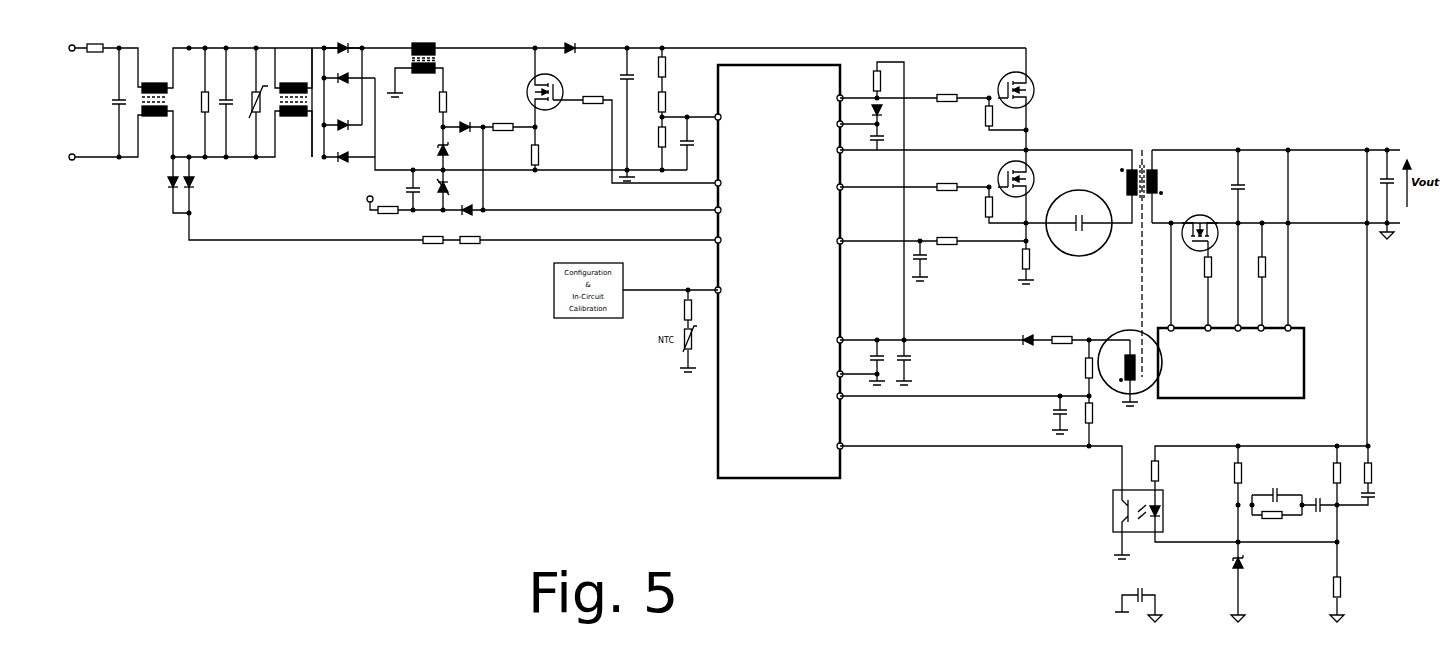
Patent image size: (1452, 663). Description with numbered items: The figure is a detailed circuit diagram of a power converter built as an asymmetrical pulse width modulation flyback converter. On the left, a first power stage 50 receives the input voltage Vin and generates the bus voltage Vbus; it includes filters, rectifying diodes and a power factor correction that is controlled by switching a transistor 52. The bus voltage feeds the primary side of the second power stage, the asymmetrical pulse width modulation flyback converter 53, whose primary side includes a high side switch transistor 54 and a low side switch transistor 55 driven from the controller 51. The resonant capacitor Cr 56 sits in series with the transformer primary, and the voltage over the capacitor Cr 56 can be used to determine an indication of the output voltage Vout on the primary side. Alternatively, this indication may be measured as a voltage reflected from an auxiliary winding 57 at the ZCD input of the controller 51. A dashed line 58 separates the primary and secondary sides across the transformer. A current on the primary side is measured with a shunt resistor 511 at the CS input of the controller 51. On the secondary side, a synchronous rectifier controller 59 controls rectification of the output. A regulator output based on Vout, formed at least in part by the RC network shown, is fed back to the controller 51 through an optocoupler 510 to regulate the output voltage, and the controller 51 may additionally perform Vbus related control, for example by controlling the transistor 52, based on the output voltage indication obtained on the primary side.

The first power stage 50 is at (473, 267).
The controller 51 is at (718, 424).
The transistor 52 is at (561, 87).
The asymmetrical pulse width modulation flyback converter 53 is at (1082, 118).
The high side switch transistor 54 is at (1036, 90).
The low side switch transistor 55 is at (1028, 165).
The capacitor Cr 56 is at (1084, 187).
The auxiliary winding 57 is at (1109, 383).
The isolation barrier of the transformer 58 is at (1140, 297).
The synchronous rectifier controller 59 is at (1303, 374).
The optocoupler 510 is at (1113, 518).
The shunt resistor 511 is at (1023, 252).